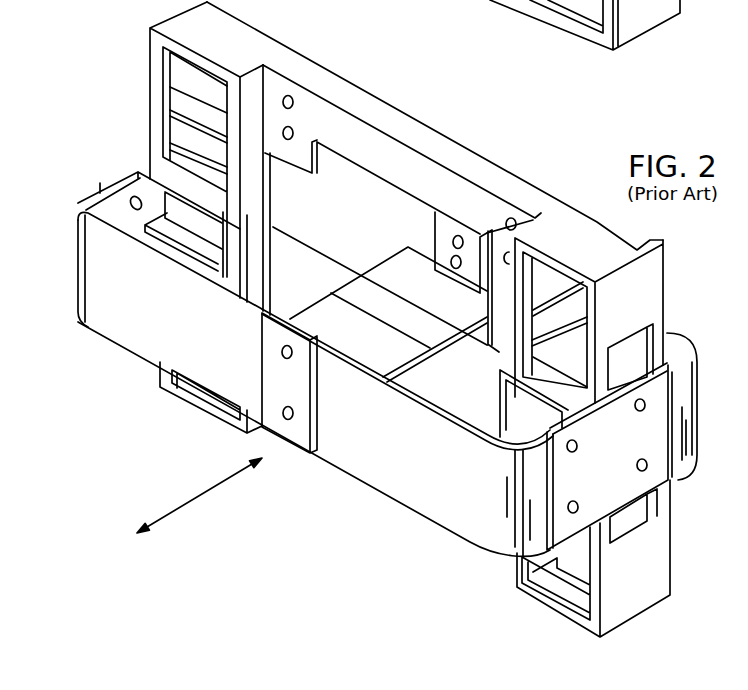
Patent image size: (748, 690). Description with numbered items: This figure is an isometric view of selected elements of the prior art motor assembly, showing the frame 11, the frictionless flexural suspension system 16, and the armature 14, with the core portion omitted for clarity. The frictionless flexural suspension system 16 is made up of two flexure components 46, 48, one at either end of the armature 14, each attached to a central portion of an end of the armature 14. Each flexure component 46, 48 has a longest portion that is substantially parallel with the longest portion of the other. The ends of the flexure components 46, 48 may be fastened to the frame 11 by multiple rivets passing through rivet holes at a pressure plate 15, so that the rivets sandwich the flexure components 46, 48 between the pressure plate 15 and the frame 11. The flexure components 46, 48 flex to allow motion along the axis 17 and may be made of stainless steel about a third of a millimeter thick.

The frame 11 is at (232, 42).
The armature 14 is at (374, 293).
The pressure plate 15 is at (617, 485).
The frictionless flexural suspension system 16 is at (138, 315).
The axis 17 is at (217, 487).
The flexure component 46 is at (697, 352).
The flexure component 48 is at (443, 495).